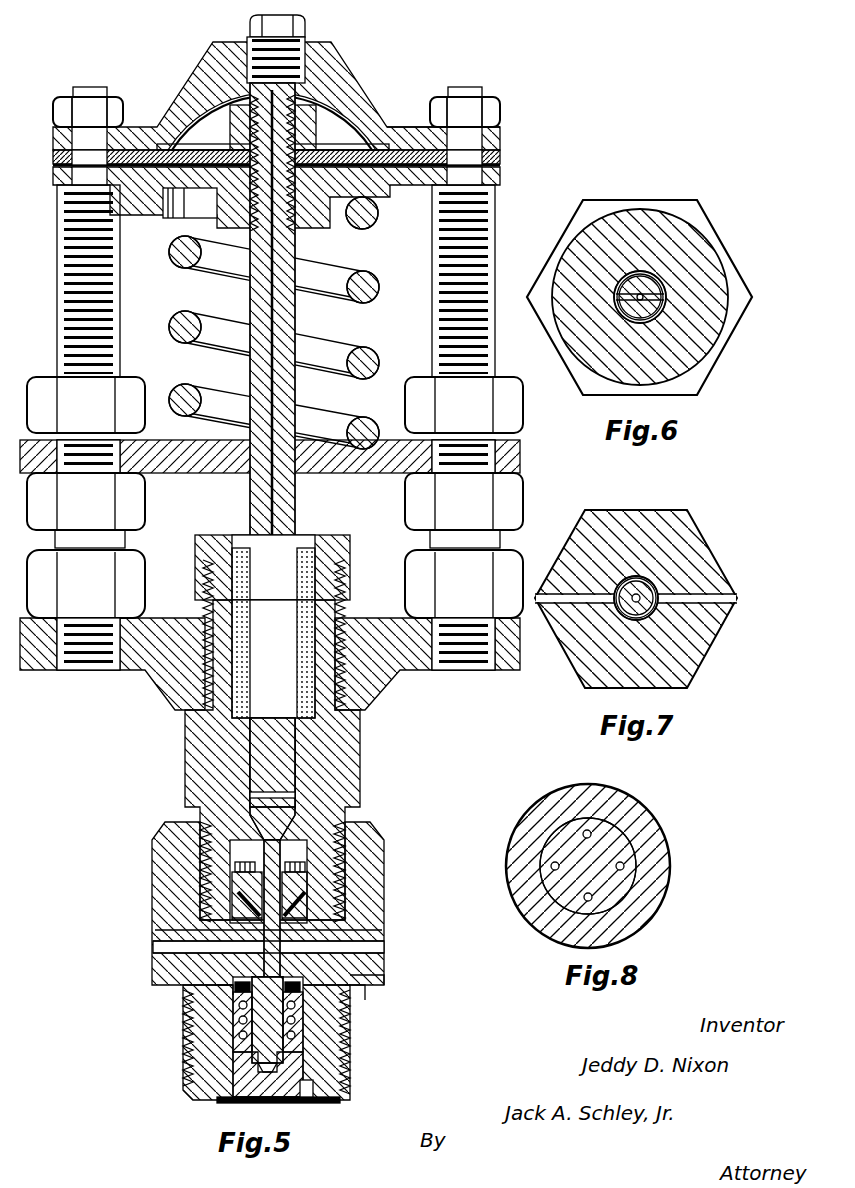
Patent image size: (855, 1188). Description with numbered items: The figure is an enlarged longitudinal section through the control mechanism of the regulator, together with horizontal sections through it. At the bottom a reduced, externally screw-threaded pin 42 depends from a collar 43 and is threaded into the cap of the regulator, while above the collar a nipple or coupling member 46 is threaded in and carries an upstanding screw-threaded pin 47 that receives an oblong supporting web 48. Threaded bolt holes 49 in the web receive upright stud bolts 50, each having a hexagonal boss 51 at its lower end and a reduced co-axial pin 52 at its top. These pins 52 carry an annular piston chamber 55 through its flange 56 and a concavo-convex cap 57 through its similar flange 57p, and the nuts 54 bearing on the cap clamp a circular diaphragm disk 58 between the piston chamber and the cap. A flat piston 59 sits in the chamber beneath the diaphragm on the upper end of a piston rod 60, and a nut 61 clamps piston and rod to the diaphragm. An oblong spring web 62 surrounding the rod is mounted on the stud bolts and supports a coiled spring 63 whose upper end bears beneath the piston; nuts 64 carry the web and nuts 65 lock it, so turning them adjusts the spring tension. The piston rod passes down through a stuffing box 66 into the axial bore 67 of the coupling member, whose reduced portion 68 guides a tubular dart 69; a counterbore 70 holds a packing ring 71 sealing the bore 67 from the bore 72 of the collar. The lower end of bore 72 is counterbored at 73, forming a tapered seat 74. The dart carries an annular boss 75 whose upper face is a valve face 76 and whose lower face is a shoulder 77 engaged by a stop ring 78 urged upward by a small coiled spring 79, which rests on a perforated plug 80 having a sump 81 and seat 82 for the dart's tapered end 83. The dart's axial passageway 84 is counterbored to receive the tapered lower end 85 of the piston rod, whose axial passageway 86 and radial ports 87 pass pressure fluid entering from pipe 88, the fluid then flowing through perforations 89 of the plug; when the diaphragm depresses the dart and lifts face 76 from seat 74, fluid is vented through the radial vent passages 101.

In FIG. 5, the externally screw-threaded pin 42 is at (195, 1052).
In FIG. 8, the externally screw-threaded pin 42 is at (640, 830).
In FIG. 5, the collar 43 is at (384, 915).
In FIG. 6, the collar 43 is at (690, 388).
In FIG. 7, the collar 43 is at (700, 552).
In FIG. 5, the coupling member 46 is at (360, 748).
In FIG. 6, the coupling member 46 is at (700, 340).
In FIG. 5, the upstanding screw-threaded pin 47 is at (210, 610).
In FIG. 5, the supporting web 48 is at (160, 660).
In FIG. 5, the bolt holes 49 is at (495, 665).
In FIG. 5, the stud bolts 50 is at (120, 320).
In FIG. 5, the hexagonal boss 51 is at (275, 584).
In FIG. 5, the co-axial pin 52 is at (88, 87).
In FIG. 5, the nuts 54 is at (118, 105).
In FIG. 5, the piston chamber 55 is at (385, 215).
In FIG. 5, the flange 56 is at (500, 170).
In FIG. 5, the cap 57 is at (345, 80).
In FIG. 5, the flange of cap 57p is at (500, 140).
In FIG. 5, the diaphragm disk 58 is at (55, 157).
In FIG. 5, the piston 59 is at (195, 218).
In FIG. 5, the piston rod 60 is at (253, 510).
In FIG. 6, the piston rod 60 is at (645, 275).
In FIG. 5, the nut 61 is at (300, 128).
In FIG. 5, the spring support web 62 is at (195, 473).
In FIG. 5, the coiled spring 63 is at (400, 298).
In FIG. 5, the nuts 64 is at (275, 510).
In FIG. 5, the nuts 65 is at (275, 405).
In FIG. 5, the stuffing box 66 is at (335, 550).
In FIG. 5, the axial bore 67 is at (232, 740).
In FIG. 5, the reduced portion 68 is at (235, 866).
In FIG. 5, the dart 69 is at (307, 885).
In FIG. 7, the dart 69 is at (640, 580).
In FIG. 5, the counterbore 70 is at (283, 870).
In FIG. 5, the packing ring 71 is at (307, 915).
In FIG. 5, the bore 72 is at (180, 930).
In FIG. 5, the counterbore 73 is at (233, 1015).
In FIG. 5, the tapered seat 74 is at (225, 990).
In FIG. 5, the annular boss 75 is at (360, 992).
In FIG. 5, the valve face 76 is at (370, 980).
In FIG. 5, the shoulder 77 is at (240, 992).
In FIG. 5, the stop ring 78 is at (303, 1010).
In FIG. 5, the coiled spring 79 is at (300, 1028).
In FIG. 5, the perforated plug 80 is at (330, 1090).
In FIG. 8, the perforated plug 80 is at (560, 900).
In FIG. 5, the sump 81 is at (272, 1085).
In FIG. 5, the seat 82 is at (190, 1097).
In FIG. 5, the tapered end 83 is at (303, 1048).
In FIG. 5, the axial passageway 84 is at (232, 893).
In FIG. 7, the axial passageway 84 is at (628, 615).
In FIG. 5, the tapered lower end 85 is at (258, 830).
In FIG. 5, the axial passageway 86 is at (297, 490).
In FIG. 6, the axial passageway 86 is at (620, 305).
In FIG. 5, the radial ports 87 is at (215, 782).
In FIG. 6, the radial ports 87 is at (662, 297).
In FIG. 5, the pipe 88 is at (255, 30).
In FIG. 5, the perforations 89 is at (310, 1097).
In FIG. 8, the perforations 89 is at (555, 862).
In FIG. 5, the vent passages 101 is at (309, 938).
In FIG. 7, the vent passages 101 is at (560, 597).